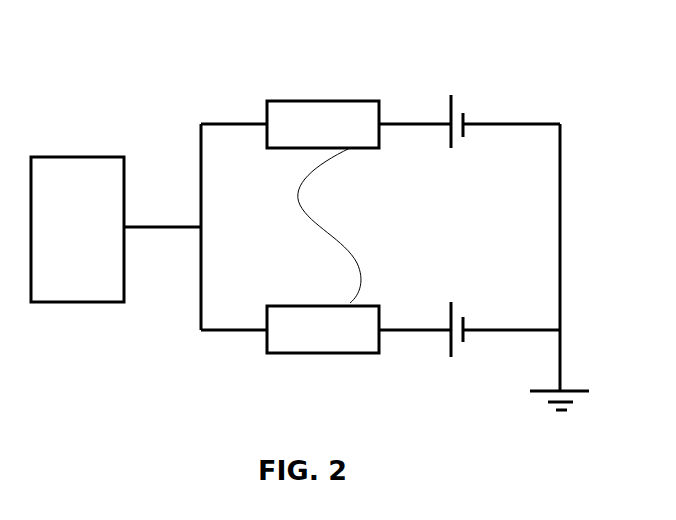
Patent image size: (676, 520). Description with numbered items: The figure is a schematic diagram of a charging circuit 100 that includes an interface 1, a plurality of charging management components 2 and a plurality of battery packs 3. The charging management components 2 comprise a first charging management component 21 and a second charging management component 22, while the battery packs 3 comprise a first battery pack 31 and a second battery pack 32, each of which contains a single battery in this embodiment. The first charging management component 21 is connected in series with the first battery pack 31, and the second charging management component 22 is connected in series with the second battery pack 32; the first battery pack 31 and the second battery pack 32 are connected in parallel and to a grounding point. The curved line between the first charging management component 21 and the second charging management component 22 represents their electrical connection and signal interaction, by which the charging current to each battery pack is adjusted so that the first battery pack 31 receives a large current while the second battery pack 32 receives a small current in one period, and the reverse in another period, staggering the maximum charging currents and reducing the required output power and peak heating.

The charging circuit 100 is at (130, 72).
The interface 1 is at (112, 263).
The charging management components 2 is at (265, 192).
The first charging management component 21 is at (307, 140).
The second charging management component 22 is at (313, 315).
The battery packs 3 is at (492, 189).
The first battery pack 31 is at (451, 148).
The second battery pack 32 is at (450, 302).